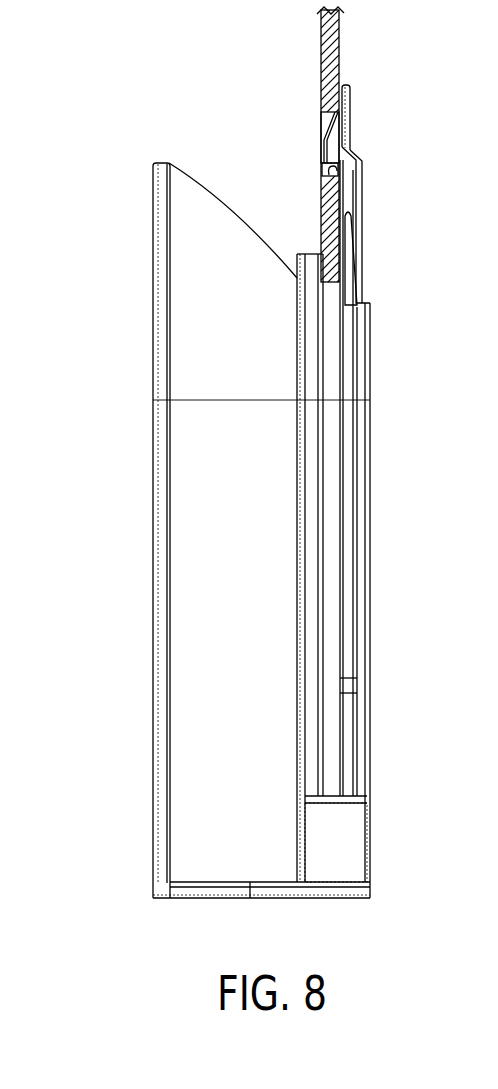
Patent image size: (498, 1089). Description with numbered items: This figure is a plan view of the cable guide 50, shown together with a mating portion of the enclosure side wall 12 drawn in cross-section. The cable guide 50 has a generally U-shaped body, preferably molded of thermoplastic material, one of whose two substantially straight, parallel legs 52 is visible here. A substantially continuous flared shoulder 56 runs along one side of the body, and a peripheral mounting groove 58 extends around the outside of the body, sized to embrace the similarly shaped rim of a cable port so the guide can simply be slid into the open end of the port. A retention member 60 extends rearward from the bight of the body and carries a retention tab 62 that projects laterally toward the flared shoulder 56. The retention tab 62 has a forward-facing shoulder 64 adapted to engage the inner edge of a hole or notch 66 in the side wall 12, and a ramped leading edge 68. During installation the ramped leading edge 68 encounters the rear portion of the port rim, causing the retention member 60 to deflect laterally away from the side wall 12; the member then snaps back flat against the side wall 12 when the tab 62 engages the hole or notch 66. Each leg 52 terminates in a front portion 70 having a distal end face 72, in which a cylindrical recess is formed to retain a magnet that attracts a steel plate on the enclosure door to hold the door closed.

The cable guide 50 is at (233, 466).
The side wall 12 is at (330, 56).
The leg 52 is at (365, 657).
The flared shoulder 56 is at (185, 453).
The peripheral mounting groove 58 is at (330, 335).
The retention member 60 is at (347, 97).
The retention tab 62 is at (337, 146).
The forward-facing shoulder 64 is at (334, 170).
The hole or notch 66 is at (330, 163).
The ramped leading edge 68 is at (334, 126).
The front portion 70 is at (357, 848).
The distal end face 72 is at (258, 898).